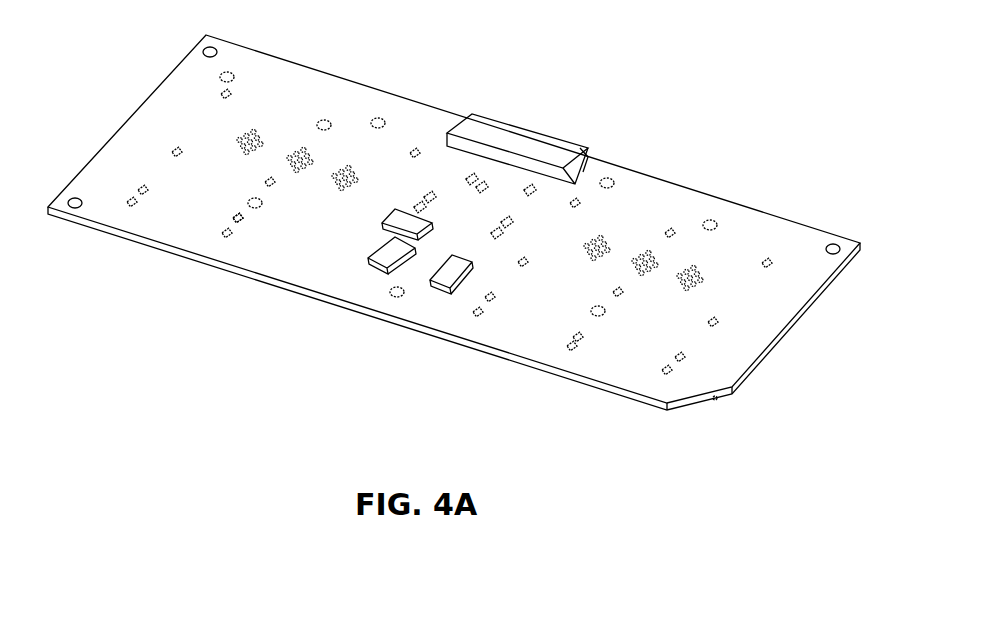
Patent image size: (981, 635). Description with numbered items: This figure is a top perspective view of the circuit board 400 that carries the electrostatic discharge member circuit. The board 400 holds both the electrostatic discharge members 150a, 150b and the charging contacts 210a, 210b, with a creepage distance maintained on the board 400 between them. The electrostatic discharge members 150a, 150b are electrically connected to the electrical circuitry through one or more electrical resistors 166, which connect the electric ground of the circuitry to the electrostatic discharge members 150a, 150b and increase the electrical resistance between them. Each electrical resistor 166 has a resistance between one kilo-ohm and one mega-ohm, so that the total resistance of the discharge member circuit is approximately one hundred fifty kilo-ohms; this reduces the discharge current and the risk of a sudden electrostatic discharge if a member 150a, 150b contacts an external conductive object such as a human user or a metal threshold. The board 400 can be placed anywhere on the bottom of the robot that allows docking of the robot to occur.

The circuit board 400 is at (724, 146).
The charging contact 210a is at (263, 80).
The charging contact 210b is at (790, 243).
The electrostatic discharge member 150a is at (220, 229).
The electrostatic discharge member 150b is at (664, 373).
The electrical resistor 166 is at (395, 210).